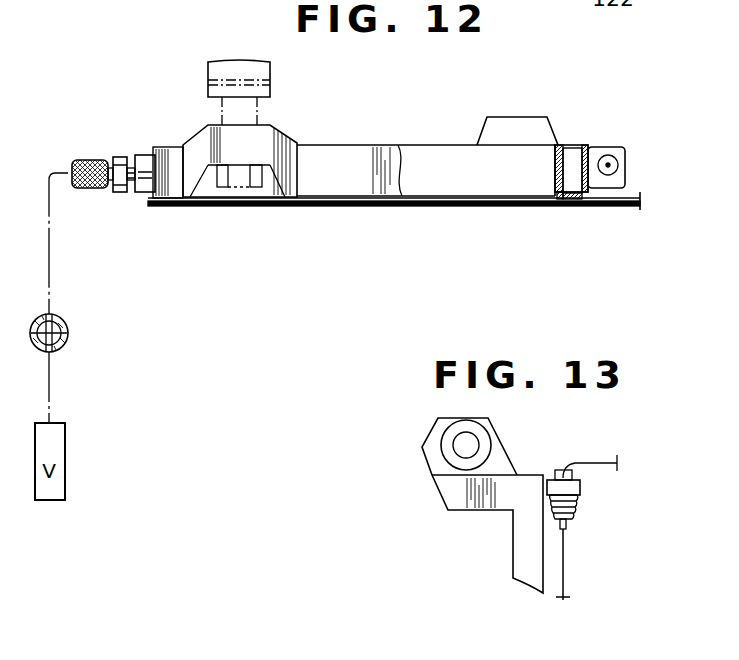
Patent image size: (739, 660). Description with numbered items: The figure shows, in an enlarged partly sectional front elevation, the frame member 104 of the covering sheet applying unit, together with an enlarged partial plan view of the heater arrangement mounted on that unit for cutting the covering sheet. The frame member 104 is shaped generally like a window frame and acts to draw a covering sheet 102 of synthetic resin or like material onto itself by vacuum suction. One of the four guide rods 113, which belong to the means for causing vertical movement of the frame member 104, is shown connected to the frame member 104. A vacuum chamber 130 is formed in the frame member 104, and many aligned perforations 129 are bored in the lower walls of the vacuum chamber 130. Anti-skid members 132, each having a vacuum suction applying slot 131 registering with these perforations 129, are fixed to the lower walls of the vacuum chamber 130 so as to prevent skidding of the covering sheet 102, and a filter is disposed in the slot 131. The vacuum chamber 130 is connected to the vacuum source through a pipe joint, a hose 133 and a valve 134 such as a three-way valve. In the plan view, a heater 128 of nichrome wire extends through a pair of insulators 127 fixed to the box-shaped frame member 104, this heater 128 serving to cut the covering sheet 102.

In FIG. 12, the covering sheet 102 is at (345, 207).
In FIG. 12, the frame member 104 is at (415, 97).
In FIG. 13, the frame member 104 is at (518, 488).
In FIG. 12, the guide rod 113 is at (255, 120).
In FIG. 13, the insulator 127 is at (578, 510).
In FIG. 12, the heater 128 is at (612, 164).
In FIG. 13, the heater 128 is at (567, 565).
In FIG. 12, the perforations 129 is at (560, 178).
In FIG. 12, the vacuum chamber 130 is at (574, 160).
In FIG. 12, the vacuum suction applying slot 131 is at (574, 204).
In FIG. 12, the anti-skid member 132 is at (546, 207).
In FIG. 12, the hose 133 is at (86, 160).
In FIG. 12, the valve 134 is at (63, 323).